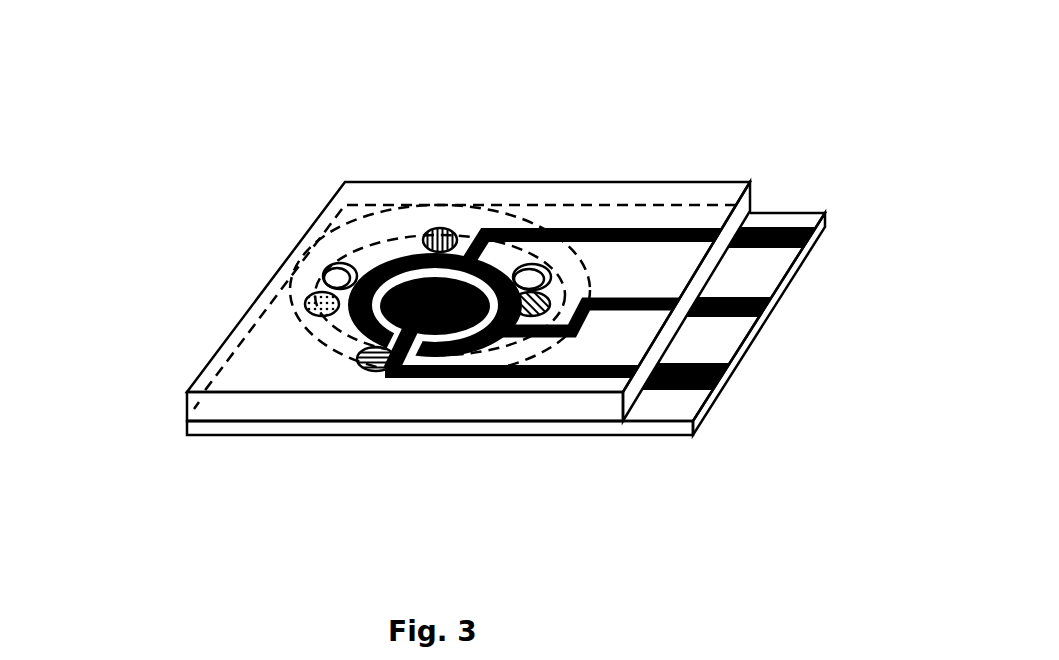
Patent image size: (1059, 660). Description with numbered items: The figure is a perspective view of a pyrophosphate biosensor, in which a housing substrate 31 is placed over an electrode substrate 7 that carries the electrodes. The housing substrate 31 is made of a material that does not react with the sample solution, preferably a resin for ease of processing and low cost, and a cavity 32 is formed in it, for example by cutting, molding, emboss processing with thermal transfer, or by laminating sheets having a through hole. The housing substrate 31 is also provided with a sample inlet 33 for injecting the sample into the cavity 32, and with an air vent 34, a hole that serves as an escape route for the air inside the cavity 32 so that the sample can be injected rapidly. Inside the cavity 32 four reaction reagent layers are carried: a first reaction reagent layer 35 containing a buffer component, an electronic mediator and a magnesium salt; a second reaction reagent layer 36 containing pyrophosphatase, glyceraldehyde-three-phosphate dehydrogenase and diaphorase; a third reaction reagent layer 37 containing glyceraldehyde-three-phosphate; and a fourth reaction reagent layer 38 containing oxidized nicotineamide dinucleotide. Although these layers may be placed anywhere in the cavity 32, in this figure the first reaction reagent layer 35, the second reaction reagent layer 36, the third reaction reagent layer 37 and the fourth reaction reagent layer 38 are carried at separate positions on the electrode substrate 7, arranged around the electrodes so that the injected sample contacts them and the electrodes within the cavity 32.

The electrode substrate 7 is at (560, 434).
The housing substrate 31 is at (660, 225).
The cavity 32 is at (340, 343).
The sample inlet 33 is at (333, 266).
The air vent 34 is at (535, 265).
The first reaction reagent layer 35 is at (306, 305).
The second reaction reagent layer 36 is at (527, 320).
The third reaction reagent layer 37 is at (433, 230).
The fourth reaction reagent layer 38 is at (370, 372).